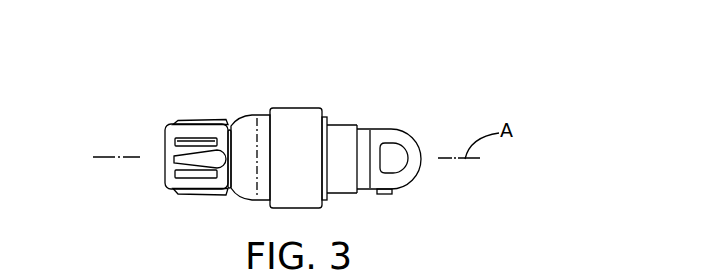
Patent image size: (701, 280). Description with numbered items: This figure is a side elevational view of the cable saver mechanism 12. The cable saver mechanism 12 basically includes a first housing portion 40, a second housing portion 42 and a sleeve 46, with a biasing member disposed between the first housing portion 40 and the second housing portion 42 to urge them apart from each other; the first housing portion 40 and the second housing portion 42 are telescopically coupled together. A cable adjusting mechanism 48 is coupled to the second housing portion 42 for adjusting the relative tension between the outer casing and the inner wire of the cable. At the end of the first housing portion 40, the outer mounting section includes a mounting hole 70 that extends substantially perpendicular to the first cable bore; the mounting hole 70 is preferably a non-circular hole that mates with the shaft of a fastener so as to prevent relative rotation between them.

The cable saver mechanism 12 is at (307, 90).
The first housing portion 40 is at (365, 122).
The second housing portion 42 is at (260, 105).
The sleeve 46 is at (312, 108).
The cable adjusting mechanism 48 is at (203, 118).
The mounting hole 70 is at (404, 165).